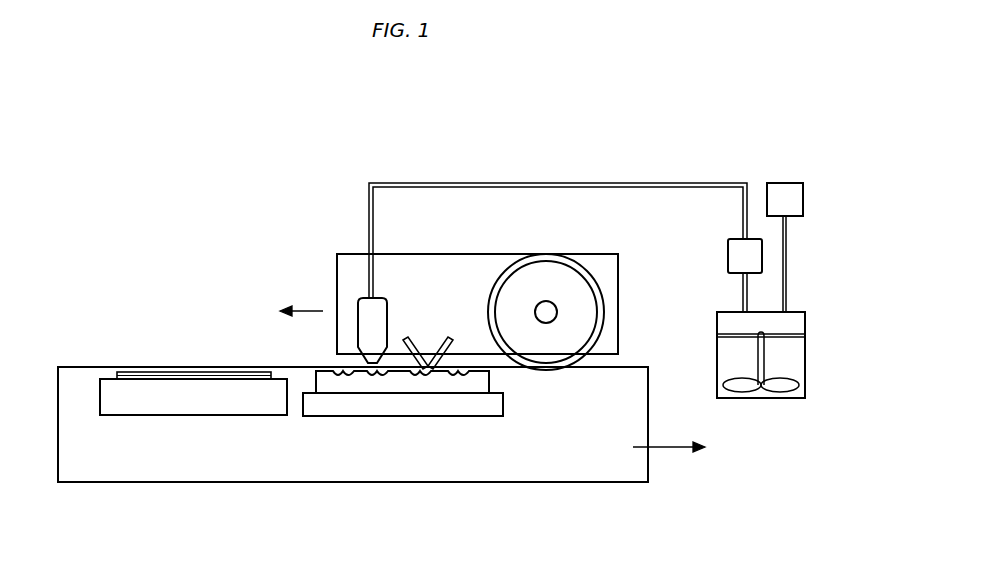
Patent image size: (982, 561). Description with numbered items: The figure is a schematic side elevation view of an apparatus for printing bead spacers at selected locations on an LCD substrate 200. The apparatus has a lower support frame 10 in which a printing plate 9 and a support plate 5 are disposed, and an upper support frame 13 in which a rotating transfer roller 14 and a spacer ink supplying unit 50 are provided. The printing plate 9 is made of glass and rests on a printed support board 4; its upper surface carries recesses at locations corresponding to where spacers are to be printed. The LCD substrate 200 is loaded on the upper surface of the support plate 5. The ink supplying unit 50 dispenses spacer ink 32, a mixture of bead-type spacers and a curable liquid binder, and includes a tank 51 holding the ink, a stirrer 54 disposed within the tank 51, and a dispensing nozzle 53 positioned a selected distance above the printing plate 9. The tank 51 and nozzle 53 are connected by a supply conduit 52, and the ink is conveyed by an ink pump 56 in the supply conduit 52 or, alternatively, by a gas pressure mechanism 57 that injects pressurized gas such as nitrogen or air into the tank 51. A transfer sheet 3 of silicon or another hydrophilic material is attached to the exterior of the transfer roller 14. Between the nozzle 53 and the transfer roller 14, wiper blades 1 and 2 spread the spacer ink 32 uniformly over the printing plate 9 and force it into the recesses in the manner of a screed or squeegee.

The wiper blade 1 is at (410, 338).
The wiper blade 2 is at (444, 338).
The transfer sheet 3 is at (605, 311).
The printed support board 4 is at (352, 416).
The support plate 5 is at (202, 415).
The printing plate 9 is at (440, 383).
The lower support frame 10 is at (115, 470).
The upper support frame 13 is at (452, 265).
The transfer roller 14 is at (552, 270).
The spacer ink 32 is at (730, 355).
The spacer ink supplying unit 50 is at (812, 190).
The tank 51 is at (806, 320).
The supply conduit 52 is at (557, 183).
The dispensing nozzle 53 is at (368, 305).
The stirrer 54 is at (765, 353).
The ink pump 56 is at (728, 256).
The gas pressure mechanism 57 is at (788, 262).
The LCD substrate 200 is at (203, 372).